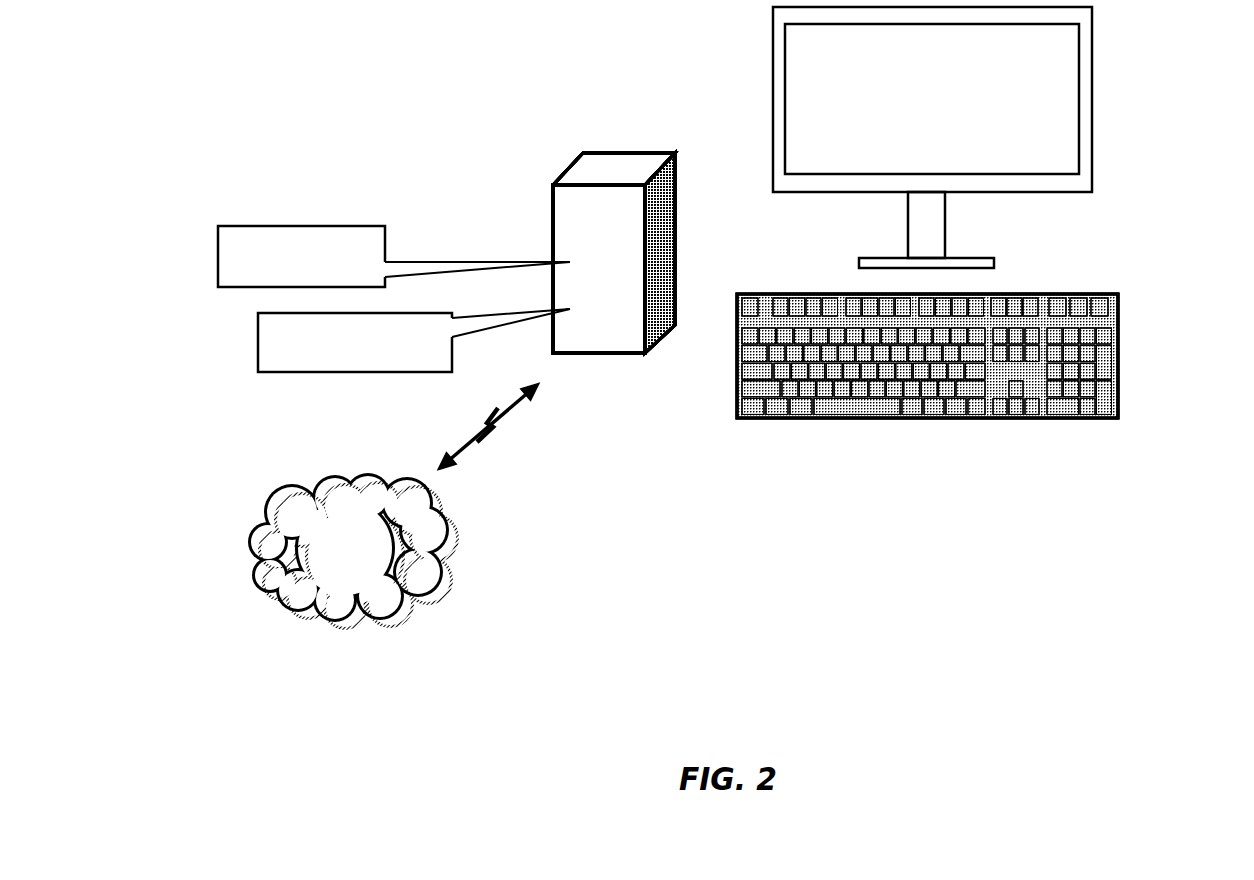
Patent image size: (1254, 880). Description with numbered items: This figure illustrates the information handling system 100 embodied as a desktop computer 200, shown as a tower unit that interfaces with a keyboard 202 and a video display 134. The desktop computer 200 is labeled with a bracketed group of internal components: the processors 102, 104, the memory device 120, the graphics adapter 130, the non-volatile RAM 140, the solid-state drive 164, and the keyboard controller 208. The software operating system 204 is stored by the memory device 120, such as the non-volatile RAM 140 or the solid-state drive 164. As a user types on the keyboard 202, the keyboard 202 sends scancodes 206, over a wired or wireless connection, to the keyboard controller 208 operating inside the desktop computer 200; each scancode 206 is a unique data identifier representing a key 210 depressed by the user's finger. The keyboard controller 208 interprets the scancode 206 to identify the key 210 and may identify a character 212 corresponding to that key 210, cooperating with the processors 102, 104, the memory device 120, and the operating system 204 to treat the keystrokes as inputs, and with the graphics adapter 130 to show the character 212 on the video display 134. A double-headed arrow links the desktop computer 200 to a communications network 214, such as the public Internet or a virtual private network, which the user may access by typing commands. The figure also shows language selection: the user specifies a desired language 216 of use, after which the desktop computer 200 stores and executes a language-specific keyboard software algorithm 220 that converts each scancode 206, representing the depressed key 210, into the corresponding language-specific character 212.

The information handling system 100 is at (583, 153).
The desktop computer 200 is at (587, 232).
The processor 102 is at (568, 217).
The processor 104 is at (614, 253).
The memory device 120 is at (529, 219).
The graphics adapter 130 is at (529, 232).
The non-volatile RAM 140 is at (529, 246).
The solid-state drive 164 is at (529, 253).
The keyboard controller 208 is at (529, 253).
The software operating system 204 is at (218, 243).
The scancode 206 is at (250, 268).
The language of use 216 is at (285, 337).
The language-specific keyboard software algorithm 220 is at (258, 357).
The communications network 214 is at (452, 550).
The video display 134 is at (1092, 56).
The keyboard 202 is at (1118, 320).
The key 210 is at (885, 388).
The character 212 is at (927, 356).